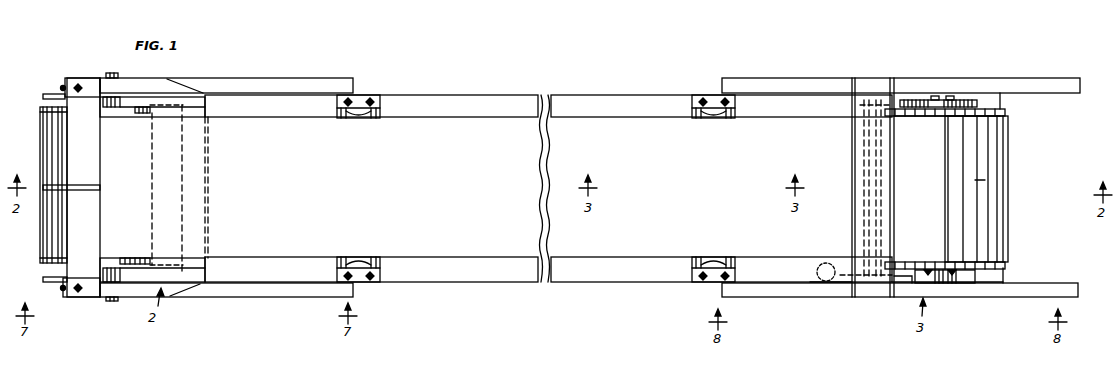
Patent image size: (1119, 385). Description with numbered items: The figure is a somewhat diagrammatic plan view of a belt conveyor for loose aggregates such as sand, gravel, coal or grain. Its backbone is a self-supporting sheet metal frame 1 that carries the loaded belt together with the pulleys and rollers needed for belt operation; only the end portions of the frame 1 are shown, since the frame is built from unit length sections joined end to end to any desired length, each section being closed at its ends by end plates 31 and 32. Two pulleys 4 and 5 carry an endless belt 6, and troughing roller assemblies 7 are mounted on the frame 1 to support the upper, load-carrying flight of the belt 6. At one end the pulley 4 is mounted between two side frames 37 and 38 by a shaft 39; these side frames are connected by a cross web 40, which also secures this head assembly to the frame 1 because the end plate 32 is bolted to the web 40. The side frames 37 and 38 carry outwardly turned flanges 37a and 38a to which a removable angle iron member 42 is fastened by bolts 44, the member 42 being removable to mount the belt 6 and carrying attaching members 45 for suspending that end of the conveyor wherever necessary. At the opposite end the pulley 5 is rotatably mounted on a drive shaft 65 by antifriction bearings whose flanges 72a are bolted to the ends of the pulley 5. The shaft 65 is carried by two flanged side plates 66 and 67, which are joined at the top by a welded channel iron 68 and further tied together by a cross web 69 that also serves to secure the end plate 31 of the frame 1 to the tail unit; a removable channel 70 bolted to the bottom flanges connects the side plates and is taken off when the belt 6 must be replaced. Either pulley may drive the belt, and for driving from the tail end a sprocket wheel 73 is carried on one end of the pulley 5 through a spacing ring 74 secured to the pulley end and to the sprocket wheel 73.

The sheet metal frame 1 is at (434, 280).
The pulley 4 is at (42, 262).
The pulley 5 is at (1004, 268).
The endless belt 6 is at (475, 252).
The troughing roller assemblies 7 is at (378, 270).
The end plate 31 is at (827, 272).
The end plate 32 is at (208, 107).
The side frame 37 is at (245, 285).
The outwardly turned flange 37a is at (133, 299).
The side frame 38 is at (297, 92).
The outwardly turned flange 38a is at (160, 82).
The shaft 39 is at (106, 300).
The cross web 40 is at (207, 270).
The angle iron member 42 is at (100, 226).
The bolts 44 is at (61, 88).
The attaching members 45 is at (43, 97).
The drive shaft 65 is at (928, 280).
The side plate 66 is at (833, 287).
The side plate 67 is at (968, 90).
The channel iron 68 is at (870, 290).
The cross web 69 is at (903, 282).
The removable channel 70 is at (1001, 103).
The flanges 72a is at (955, 280).
The sprocket wheel 73 is at (922, 101).
The spacing ring 74 is at (940, 110).